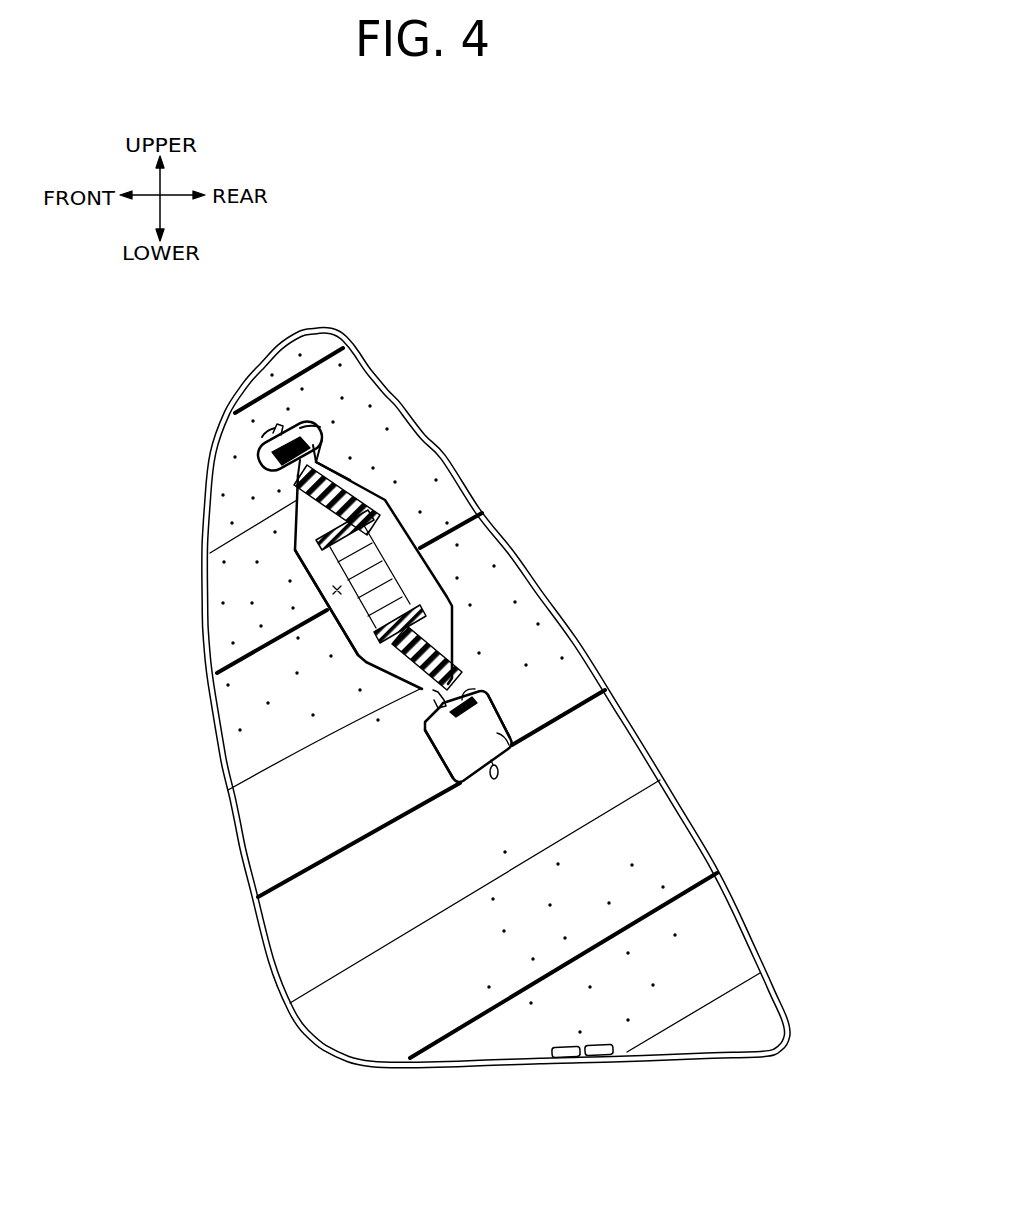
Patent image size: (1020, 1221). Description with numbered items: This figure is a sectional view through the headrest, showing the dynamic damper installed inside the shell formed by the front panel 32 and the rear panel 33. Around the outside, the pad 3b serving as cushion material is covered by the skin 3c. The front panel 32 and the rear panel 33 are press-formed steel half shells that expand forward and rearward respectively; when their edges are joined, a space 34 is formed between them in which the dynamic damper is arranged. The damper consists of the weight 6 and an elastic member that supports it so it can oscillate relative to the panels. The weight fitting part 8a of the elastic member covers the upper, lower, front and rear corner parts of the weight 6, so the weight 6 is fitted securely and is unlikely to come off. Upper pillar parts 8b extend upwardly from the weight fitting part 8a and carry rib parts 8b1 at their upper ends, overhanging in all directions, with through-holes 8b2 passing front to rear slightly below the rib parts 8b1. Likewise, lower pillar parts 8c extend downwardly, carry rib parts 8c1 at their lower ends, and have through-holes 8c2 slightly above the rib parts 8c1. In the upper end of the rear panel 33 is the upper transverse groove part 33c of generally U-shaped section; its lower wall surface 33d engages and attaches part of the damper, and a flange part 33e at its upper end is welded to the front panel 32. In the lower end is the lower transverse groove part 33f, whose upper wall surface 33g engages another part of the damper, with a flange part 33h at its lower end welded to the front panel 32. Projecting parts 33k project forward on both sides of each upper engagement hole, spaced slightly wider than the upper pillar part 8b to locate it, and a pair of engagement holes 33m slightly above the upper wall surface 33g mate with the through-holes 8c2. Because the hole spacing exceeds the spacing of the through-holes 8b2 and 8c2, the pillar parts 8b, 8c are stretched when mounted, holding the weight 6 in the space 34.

The pad 3b is at (300, 930).
The skin 3c is at (243, 876).
The weight 6 is at (396, 514).
The weight fitting part 8a is at (294, 550).
The upper pillar parts 8b is at (385, 455).
The rib parts 8b1 is at (262, 442).
The through-holes 8b2 is at (293, 477).
The lower pillar parts 8c is at (450, 632).
The rib parts 8c1 is at (478, 712).
The through-holes 8c2 is at (437, 740).
The front panel 32 is at (340, 628).
The rear panel 33 is at (437, 573).
The upper transverse groove part 33c is at (317, 421).
The lower wall surface 33d is at (322, 443).
The flange part 33e is at (278, 428).
The lower transverse groove part 33f is at (516, 755).
The upper wall surface 33g is at (468, 685).
The flange part 33h is at (497, 773).
The projecting parts 33k is at (345, 475).
The engagement holes 33m is at (432, 722).
The space 34 is at (335, 590).